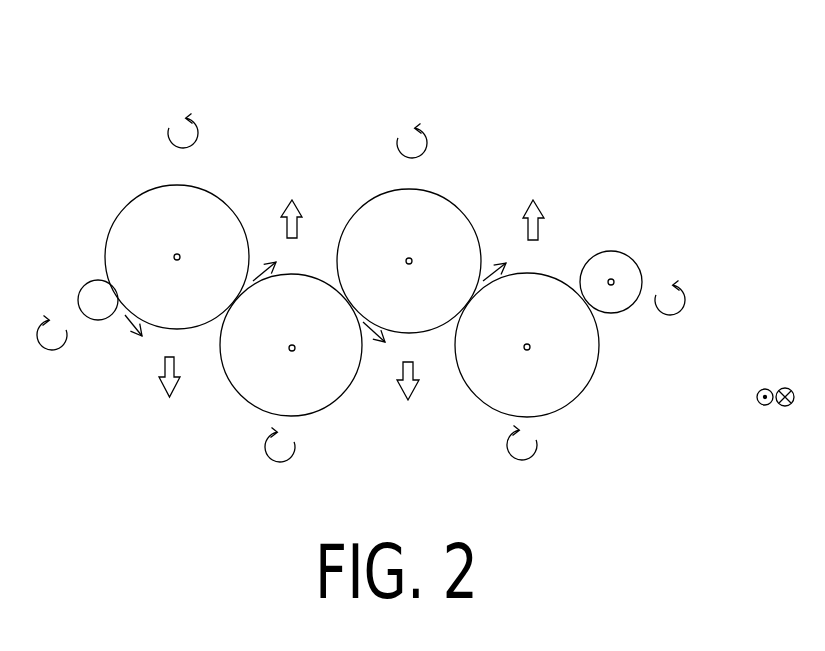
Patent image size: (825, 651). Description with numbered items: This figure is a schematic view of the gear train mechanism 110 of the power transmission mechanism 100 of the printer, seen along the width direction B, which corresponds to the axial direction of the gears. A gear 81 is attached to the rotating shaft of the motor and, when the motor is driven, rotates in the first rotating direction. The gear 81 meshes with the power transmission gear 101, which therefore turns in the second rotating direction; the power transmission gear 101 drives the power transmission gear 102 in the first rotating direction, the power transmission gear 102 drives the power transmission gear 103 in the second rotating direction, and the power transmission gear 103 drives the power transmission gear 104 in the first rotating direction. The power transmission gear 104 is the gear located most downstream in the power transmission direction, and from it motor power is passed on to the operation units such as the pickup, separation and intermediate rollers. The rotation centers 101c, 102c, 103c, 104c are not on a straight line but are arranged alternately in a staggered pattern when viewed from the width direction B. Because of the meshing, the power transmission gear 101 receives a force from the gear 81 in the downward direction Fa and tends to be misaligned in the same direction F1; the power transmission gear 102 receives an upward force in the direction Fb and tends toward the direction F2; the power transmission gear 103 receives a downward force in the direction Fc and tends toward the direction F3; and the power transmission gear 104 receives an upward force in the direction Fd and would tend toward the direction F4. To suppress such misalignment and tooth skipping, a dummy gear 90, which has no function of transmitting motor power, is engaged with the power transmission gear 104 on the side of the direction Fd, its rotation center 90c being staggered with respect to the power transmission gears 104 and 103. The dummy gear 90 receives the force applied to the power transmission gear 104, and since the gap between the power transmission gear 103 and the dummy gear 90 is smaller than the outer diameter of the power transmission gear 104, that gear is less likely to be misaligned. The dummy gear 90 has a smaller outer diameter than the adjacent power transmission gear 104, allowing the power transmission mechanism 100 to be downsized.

The power transmission mechanism 100 is at (648, 100).
The gear train mechanism 110 is at (532, 143).
The power transmission gear 101 is at (142, 192).
The rotation center 101c is at (178, 254).
The power transmission gear 102 is at (313, 416).
The rotation center 102c is at (291, 351).
The power transmission gear 103 is at (383, 192).
The rotation center 103c is at (411, 258).
The power transmission gear 104 is at (568, 405).
The rotation center 104c is at (526, 350).
The gear 81 is at (85, 286).
The dummy gear 90 is at (636, 258).
The rotation center 90c is at (611, 279).
The direction Fa is at (128, 336).
The direction Fb is at (267, 259).
The direction Fc is at (378, 345).
The direction Fd is at (499, 260).
The direction F1 is at (171, 392).
The direction F2 is at (294, 204).
The direction F3 is at (407, 397).
The direction F4 is at (534, 205).
The width direction B is at (775, 385).